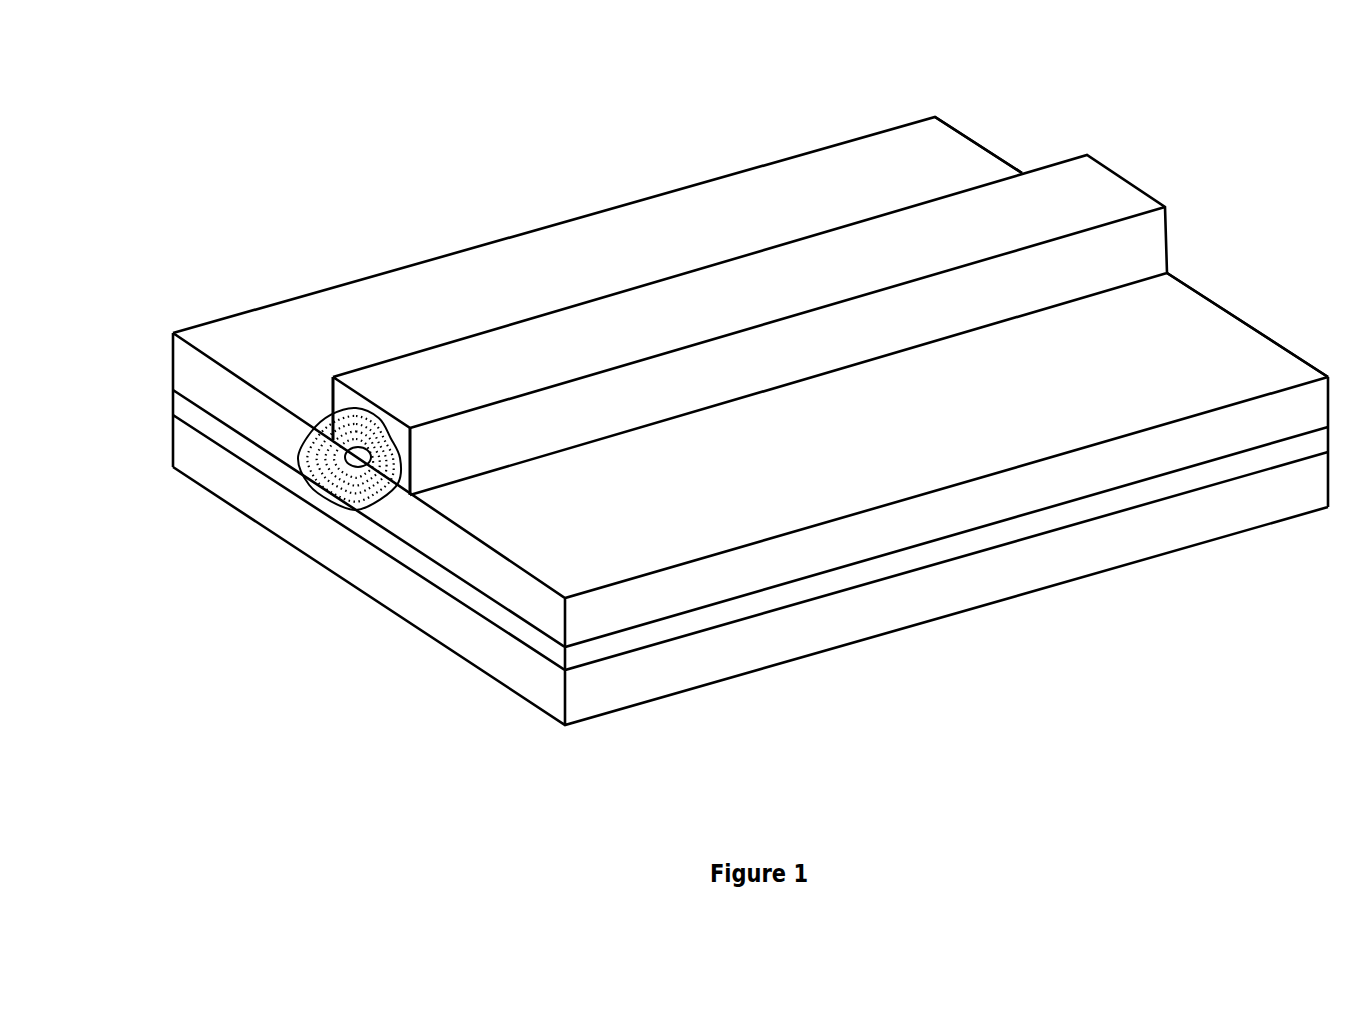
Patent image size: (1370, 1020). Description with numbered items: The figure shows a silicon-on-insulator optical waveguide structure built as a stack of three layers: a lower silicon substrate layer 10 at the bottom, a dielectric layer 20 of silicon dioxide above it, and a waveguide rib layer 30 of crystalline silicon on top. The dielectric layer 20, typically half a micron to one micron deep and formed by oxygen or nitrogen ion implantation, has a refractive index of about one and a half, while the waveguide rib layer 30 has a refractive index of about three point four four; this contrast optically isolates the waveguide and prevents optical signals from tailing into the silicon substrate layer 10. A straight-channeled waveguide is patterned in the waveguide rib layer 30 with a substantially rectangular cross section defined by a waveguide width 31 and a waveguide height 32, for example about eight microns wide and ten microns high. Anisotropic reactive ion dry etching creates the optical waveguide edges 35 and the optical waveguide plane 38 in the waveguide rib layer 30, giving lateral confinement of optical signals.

The lower silicon substrate layer 10 is at (482, 632).
The dielectric layer 20 is at (338, 497).
The waveguide rib layer 30 is at (593, 612).
The waveguide width 31 is at (345, 368).
The waveguide height 32 is at (433, 443).
The optical waveguide edges 35 is at (752, 360).
The optical waveguide plane 38 is at (935, 152).